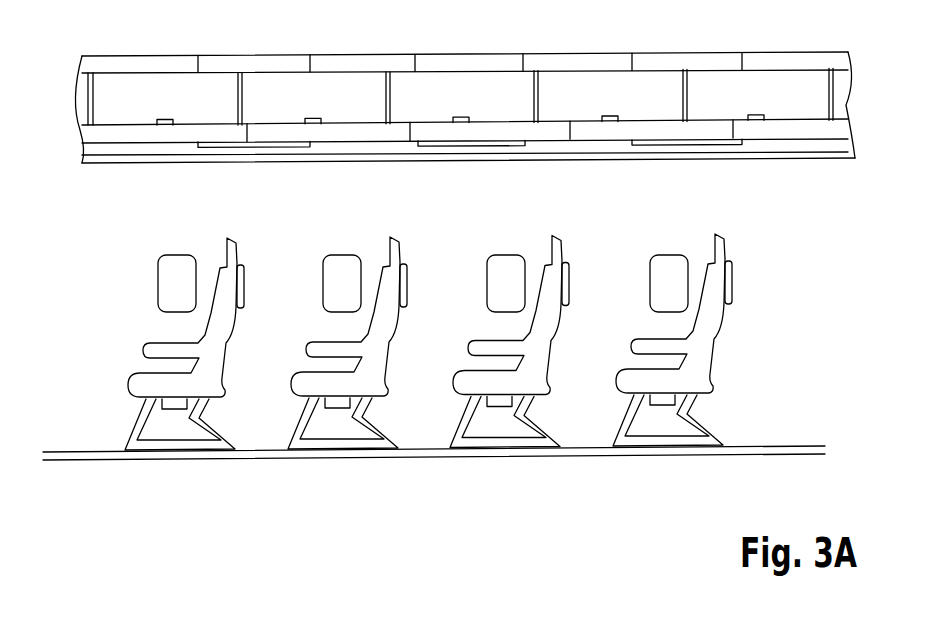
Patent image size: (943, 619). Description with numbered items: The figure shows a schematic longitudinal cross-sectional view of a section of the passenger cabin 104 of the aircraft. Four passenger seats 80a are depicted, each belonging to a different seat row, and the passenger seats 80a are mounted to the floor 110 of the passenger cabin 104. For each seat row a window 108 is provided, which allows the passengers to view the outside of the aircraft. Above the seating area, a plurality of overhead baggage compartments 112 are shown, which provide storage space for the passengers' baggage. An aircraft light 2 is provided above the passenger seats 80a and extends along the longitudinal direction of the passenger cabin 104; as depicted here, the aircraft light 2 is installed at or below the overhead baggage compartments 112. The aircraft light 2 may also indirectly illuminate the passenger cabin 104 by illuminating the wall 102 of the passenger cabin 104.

The aircraft light 2 is at (97, 158).
The overhead baggage compartments 112 is at (460, 65).
The window 108 is at (406, 259).
The passenger seats 80a is at (452, 306).
The floor 110 is at (788, 446).
The wall 102 is at (115, 301).
The passenger cabin 104 is at (93, 328).